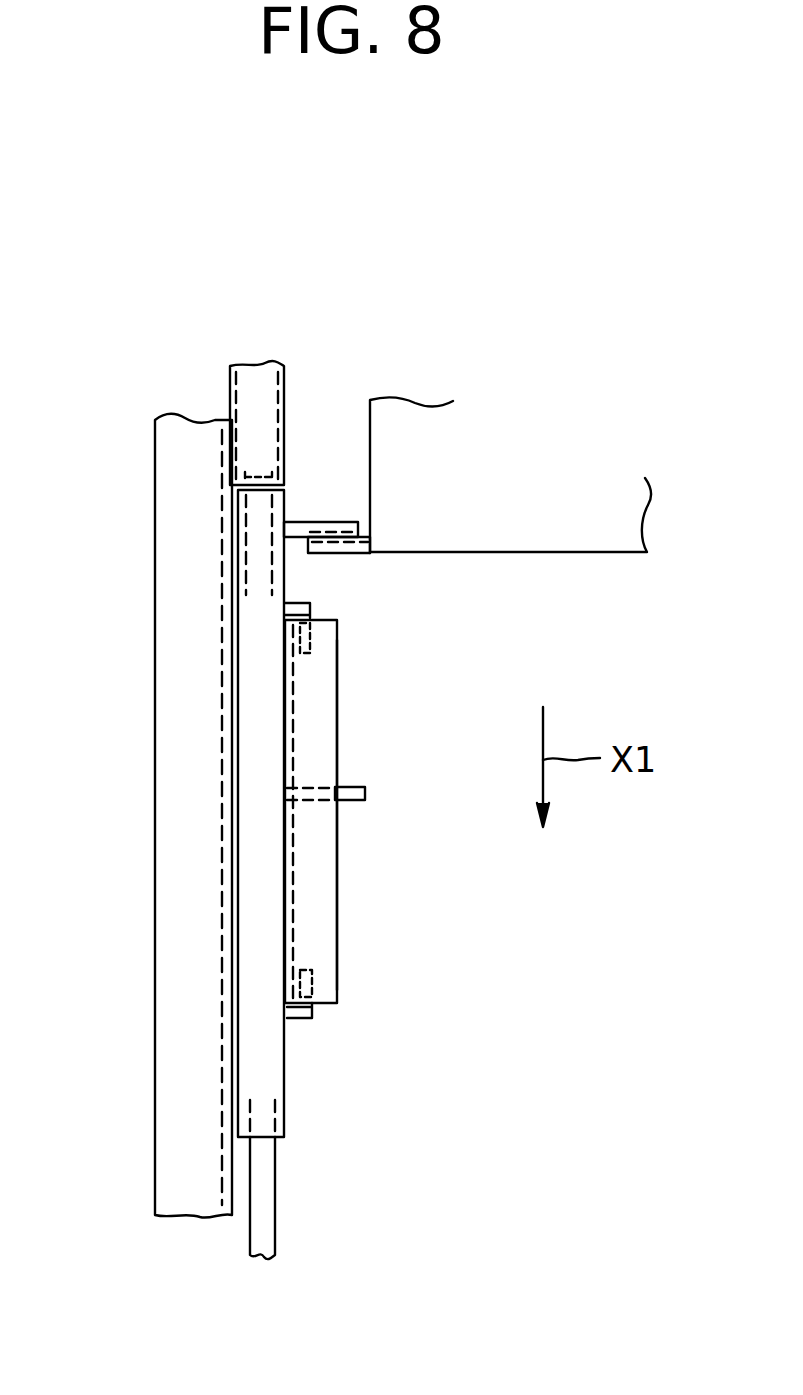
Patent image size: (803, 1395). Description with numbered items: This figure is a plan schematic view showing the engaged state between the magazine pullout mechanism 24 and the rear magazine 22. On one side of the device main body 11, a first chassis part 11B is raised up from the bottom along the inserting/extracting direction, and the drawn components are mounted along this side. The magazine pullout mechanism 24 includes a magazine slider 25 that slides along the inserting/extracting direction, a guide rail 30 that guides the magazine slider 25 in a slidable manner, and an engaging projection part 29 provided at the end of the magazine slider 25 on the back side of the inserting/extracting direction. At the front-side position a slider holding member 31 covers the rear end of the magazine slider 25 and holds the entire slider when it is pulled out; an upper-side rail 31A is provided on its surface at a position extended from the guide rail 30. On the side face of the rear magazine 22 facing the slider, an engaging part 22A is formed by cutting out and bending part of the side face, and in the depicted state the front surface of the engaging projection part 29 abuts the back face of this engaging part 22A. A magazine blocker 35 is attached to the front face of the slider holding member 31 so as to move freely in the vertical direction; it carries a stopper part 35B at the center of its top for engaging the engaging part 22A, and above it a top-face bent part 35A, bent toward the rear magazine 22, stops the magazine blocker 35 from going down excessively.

The device main body 11 is at (155, 566).
The first chassis part 11B is at (175, 658).
The rear magazine 22 is at (573, 537).
The engaging part 22A is at (343, 545).
The magazine pullout mechanism 24 is at (250, 1230).
The magazine slider 25 is at (267, 1192).
The engaging projection part 29 is at (313, 522).
The guide rail 30 is at (286, 396).
The slider holding member 31 is at (267, 1075).
The upper-side rail 31A is at (302, 595).
The magazine blocker 35 is at (312, 890).
The top-face bent part 35A is at (317, 927).
The stopper part 35B is at (353, 787).